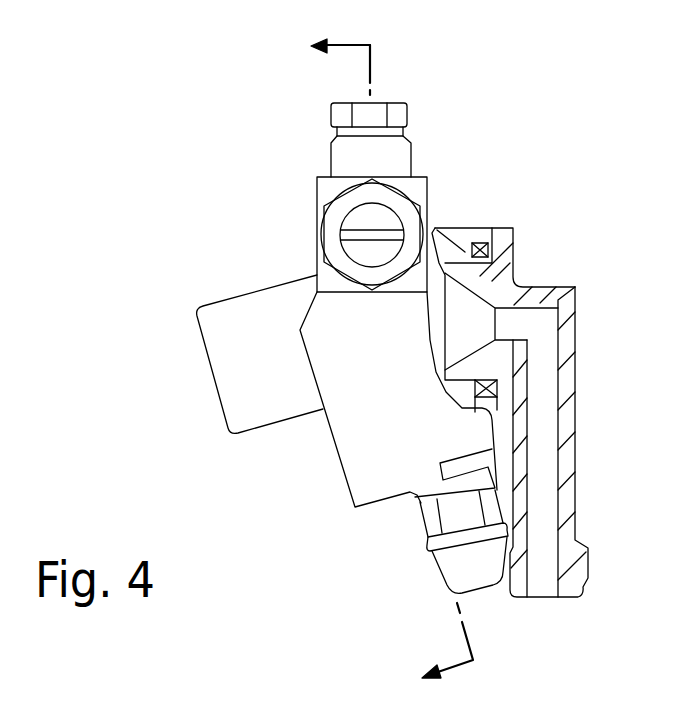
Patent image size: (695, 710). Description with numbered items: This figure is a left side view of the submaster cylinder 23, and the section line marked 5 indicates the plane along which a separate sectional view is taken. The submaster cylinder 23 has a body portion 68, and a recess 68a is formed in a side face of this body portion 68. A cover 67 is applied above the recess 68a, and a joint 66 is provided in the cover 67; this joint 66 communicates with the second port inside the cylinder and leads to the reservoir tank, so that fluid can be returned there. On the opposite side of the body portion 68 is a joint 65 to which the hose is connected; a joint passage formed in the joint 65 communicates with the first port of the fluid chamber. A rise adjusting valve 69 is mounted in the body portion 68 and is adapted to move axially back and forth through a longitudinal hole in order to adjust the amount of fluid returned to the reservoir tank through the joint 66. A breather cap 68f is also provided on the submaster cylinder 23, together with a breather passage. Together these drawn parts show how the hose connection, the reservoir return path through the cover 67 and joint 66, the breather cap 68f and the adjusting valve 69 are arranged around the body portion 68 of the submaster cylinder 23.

The section line V-V 5 is at (375, 366).
The submaster cylinder 23 is at (281, 197).
The joint 65 is at (232, 403).
The joint 66 is at (547, 443).
The cover 67 is at (518, 272).
The body portion 68 is at (478, 383).
The recess 68a is at (465, 325).
The breather cap 68f is at (480, 573).
The rise adjusting valve 69 is at (362, 231).